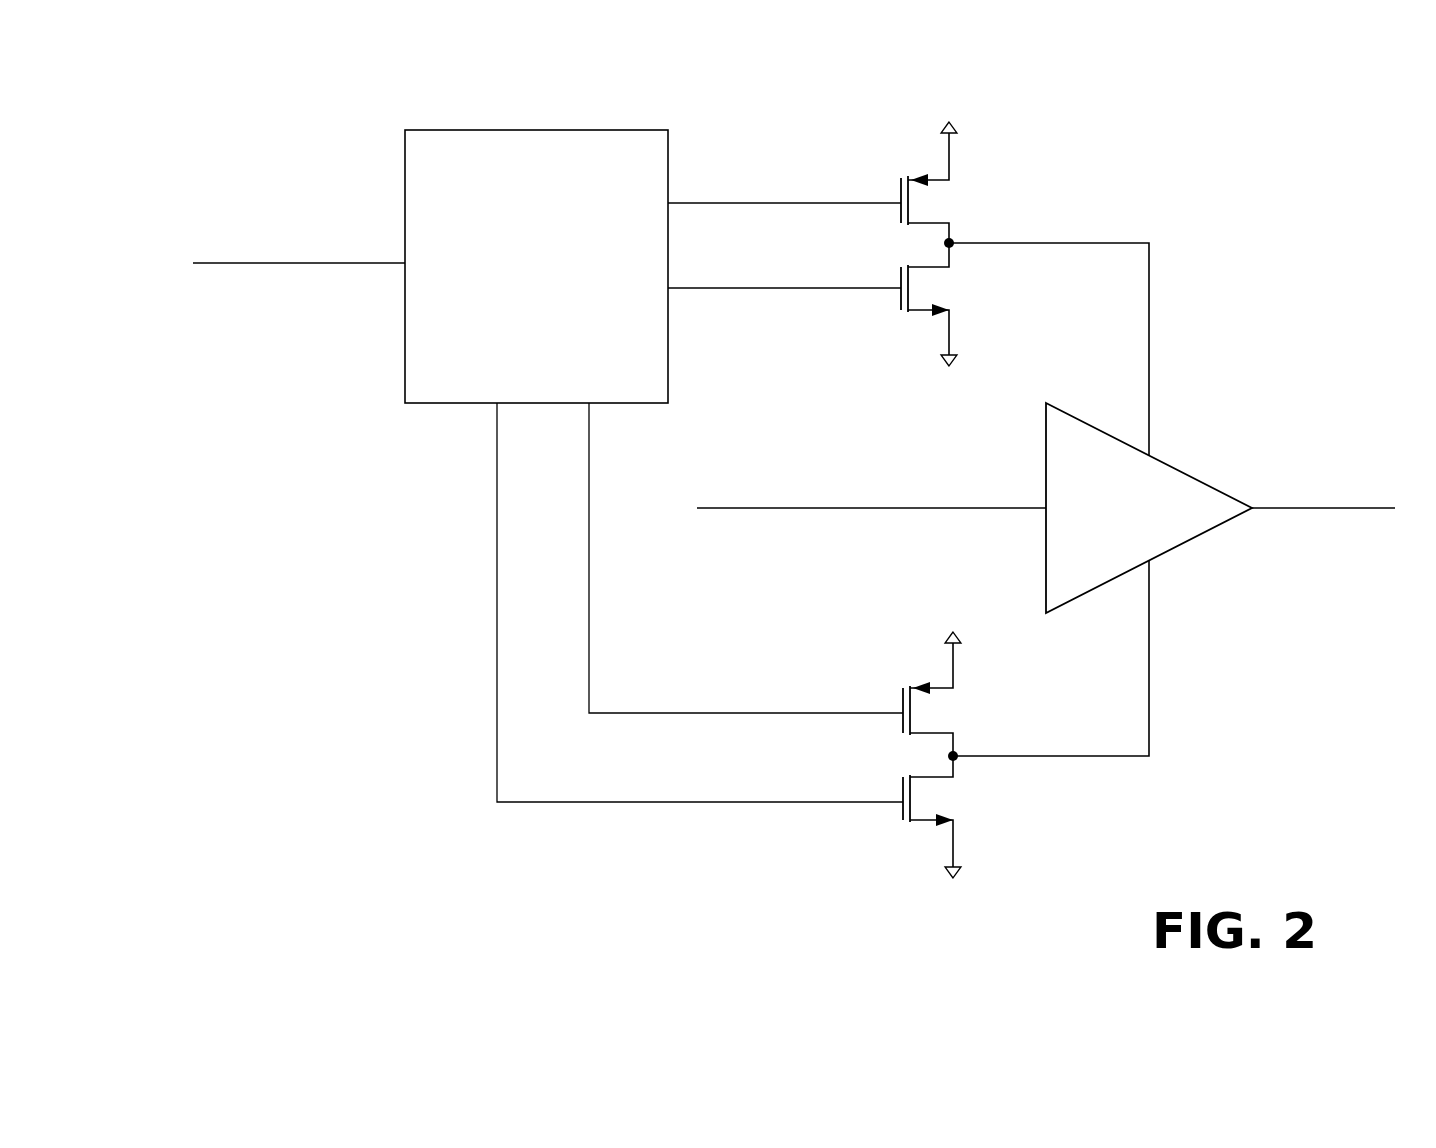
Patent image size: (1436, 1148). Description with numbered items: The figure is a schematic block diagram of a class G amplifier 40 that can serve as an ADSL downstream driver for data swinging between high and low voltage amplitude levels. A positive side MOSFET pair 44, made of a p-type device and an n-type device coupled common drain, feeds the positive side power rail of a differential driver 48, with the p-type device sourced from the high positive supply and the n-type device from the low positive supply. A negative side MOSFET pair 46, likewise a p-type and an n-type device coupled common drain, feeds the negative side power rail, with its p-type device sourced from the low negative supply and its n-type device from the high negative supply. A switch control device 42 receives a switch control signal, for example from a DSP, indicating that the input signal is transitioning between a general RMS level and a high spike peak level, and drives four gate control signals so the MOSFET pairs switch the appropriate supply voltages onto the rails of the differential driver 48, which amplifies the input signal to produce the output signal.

The class G amplifier 40 is at (1212, 84).
The switch control device 42 is at (555, 130).
The positive side MOSFET pair 44 is at (880, 130).
The negative side MOSFET pair 46 is at (882, 662).
The differential driver 48 is at (1080, 417).